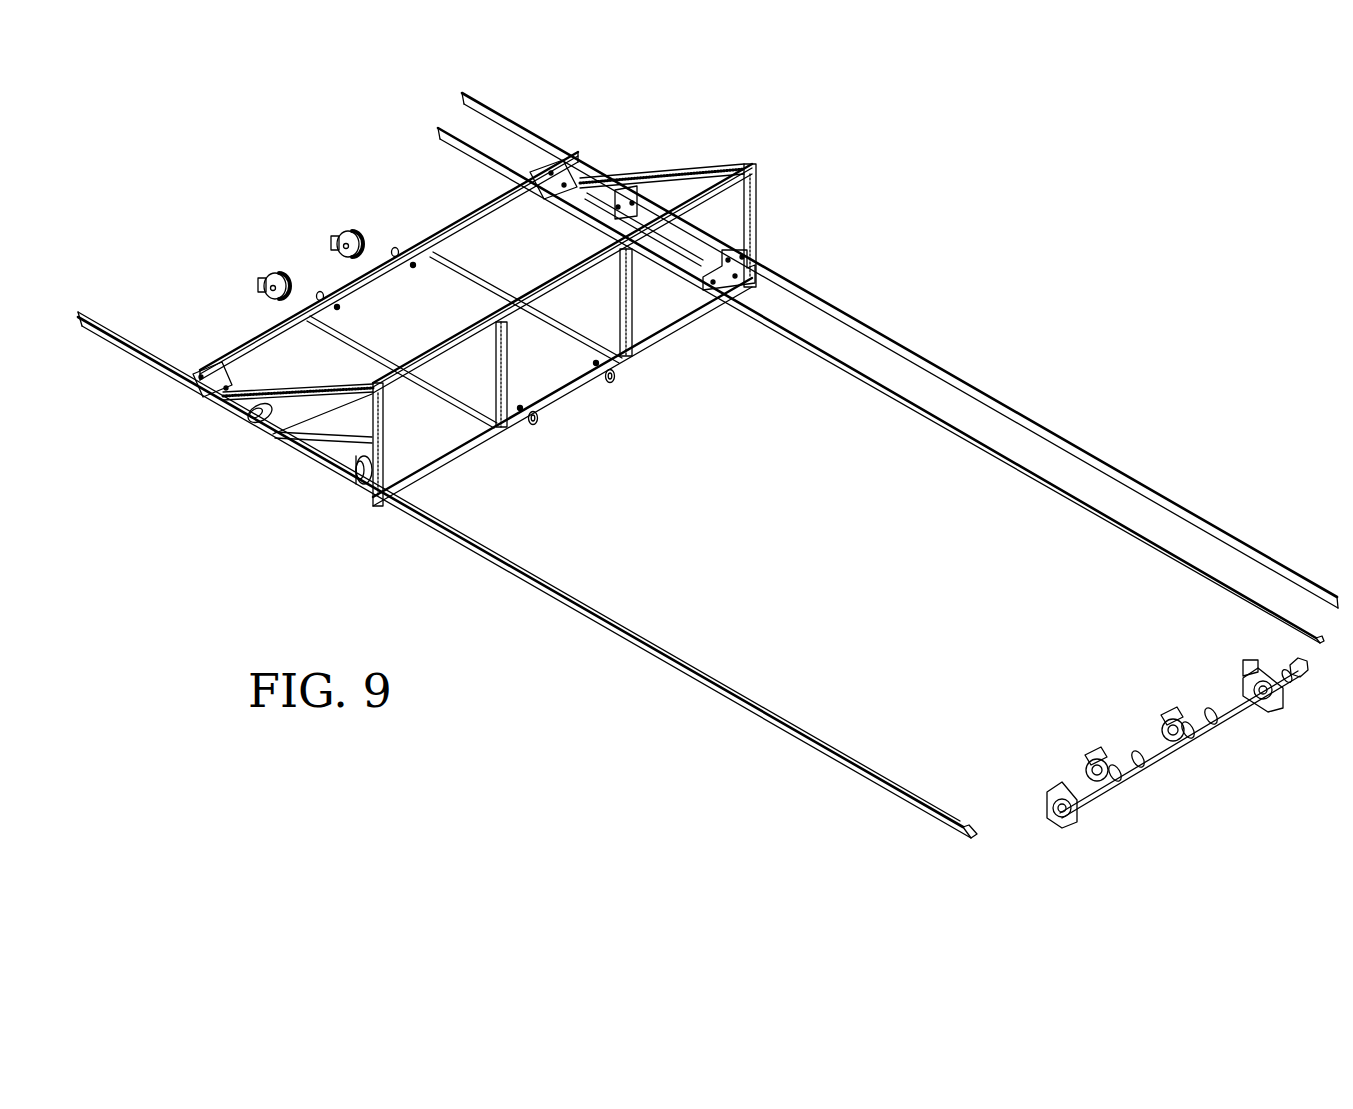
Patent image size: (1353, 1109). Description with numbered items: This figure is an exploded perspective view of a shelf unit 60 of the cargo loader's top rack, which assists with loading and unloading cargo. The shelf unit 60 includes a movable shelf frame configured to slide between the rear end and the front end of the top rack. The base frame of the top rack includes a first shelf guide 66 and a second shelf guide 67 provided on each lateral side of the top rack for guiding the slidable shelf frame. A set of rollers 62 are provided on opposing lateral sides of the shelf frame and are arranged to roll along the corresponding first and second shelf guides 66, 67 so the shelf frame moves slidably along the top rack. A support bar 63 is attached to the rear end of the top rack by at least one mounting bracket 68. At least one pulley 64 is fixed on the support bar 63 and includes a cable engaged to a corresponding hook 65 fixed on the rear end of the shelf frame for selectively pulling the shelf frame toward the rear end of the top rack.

The shelf unit 60 is at (766, 213).
The rollers 62 is at (360, 481).
The support bar 63 is at (1163, 745).
The pulley 64 is at (348, 232).
The hook 65 is at (533, 425).
The first shelf guide 66 is at (953, 380).
The second shelf guide 67 is at (1072, 493).
The mounting bracket 68 is at (1270, 692).